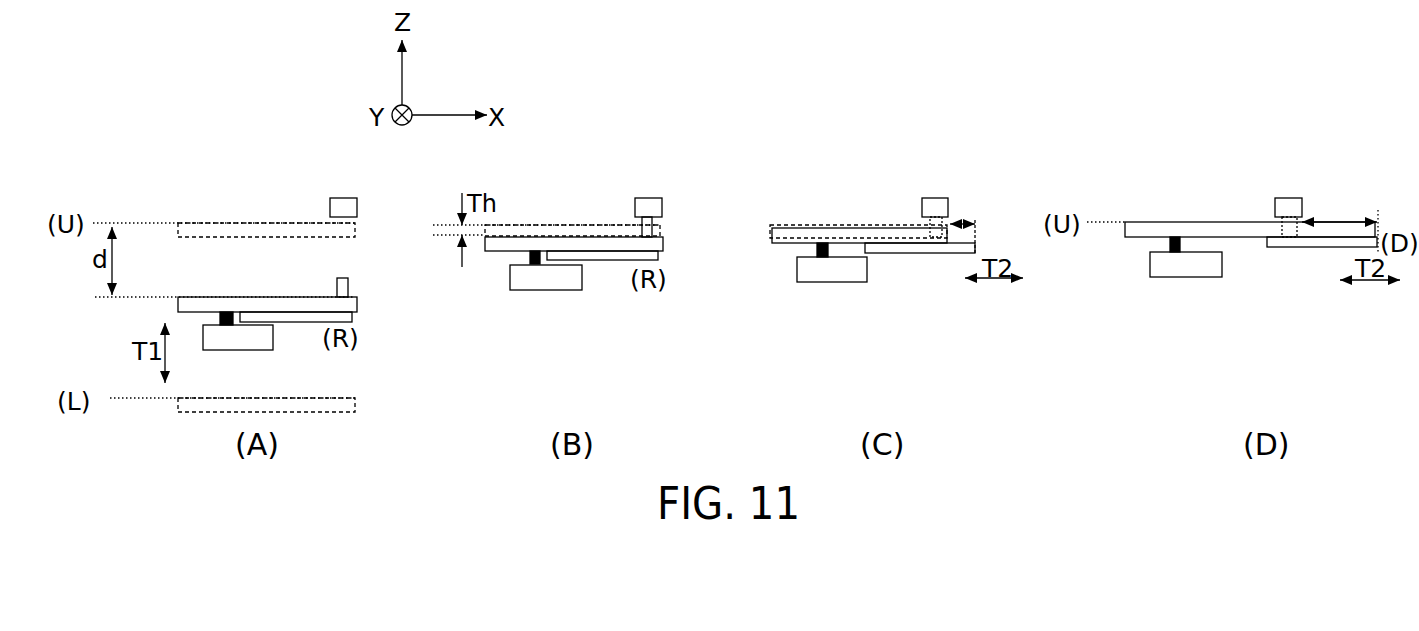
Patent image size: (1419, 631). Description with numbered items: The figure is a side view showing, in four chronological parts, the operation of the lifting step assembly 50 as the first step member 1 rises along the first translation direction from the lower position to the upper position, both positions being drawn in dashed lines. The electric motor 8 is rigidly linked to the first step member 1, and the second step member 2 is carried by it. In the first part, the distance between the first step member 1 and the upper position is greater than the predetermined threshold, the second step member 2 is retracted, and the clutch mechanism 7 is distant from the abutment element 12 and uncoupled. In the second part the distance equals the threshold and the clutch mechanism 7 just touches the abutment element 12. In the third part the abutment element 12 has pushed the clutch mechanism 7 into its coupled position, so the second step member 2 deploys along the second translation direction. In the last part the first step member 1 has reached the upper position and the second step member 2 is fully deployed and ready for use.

The lifting step assembly 50 is at (211, 148).
The first step member 1 is at (210, 305).
The second step member 2 is at (330, 315).
The clutch mechanism 7 is at (337, 287).
The electric motor 8 is at (237, 337).
The abutment element 12 is at (330, 206).